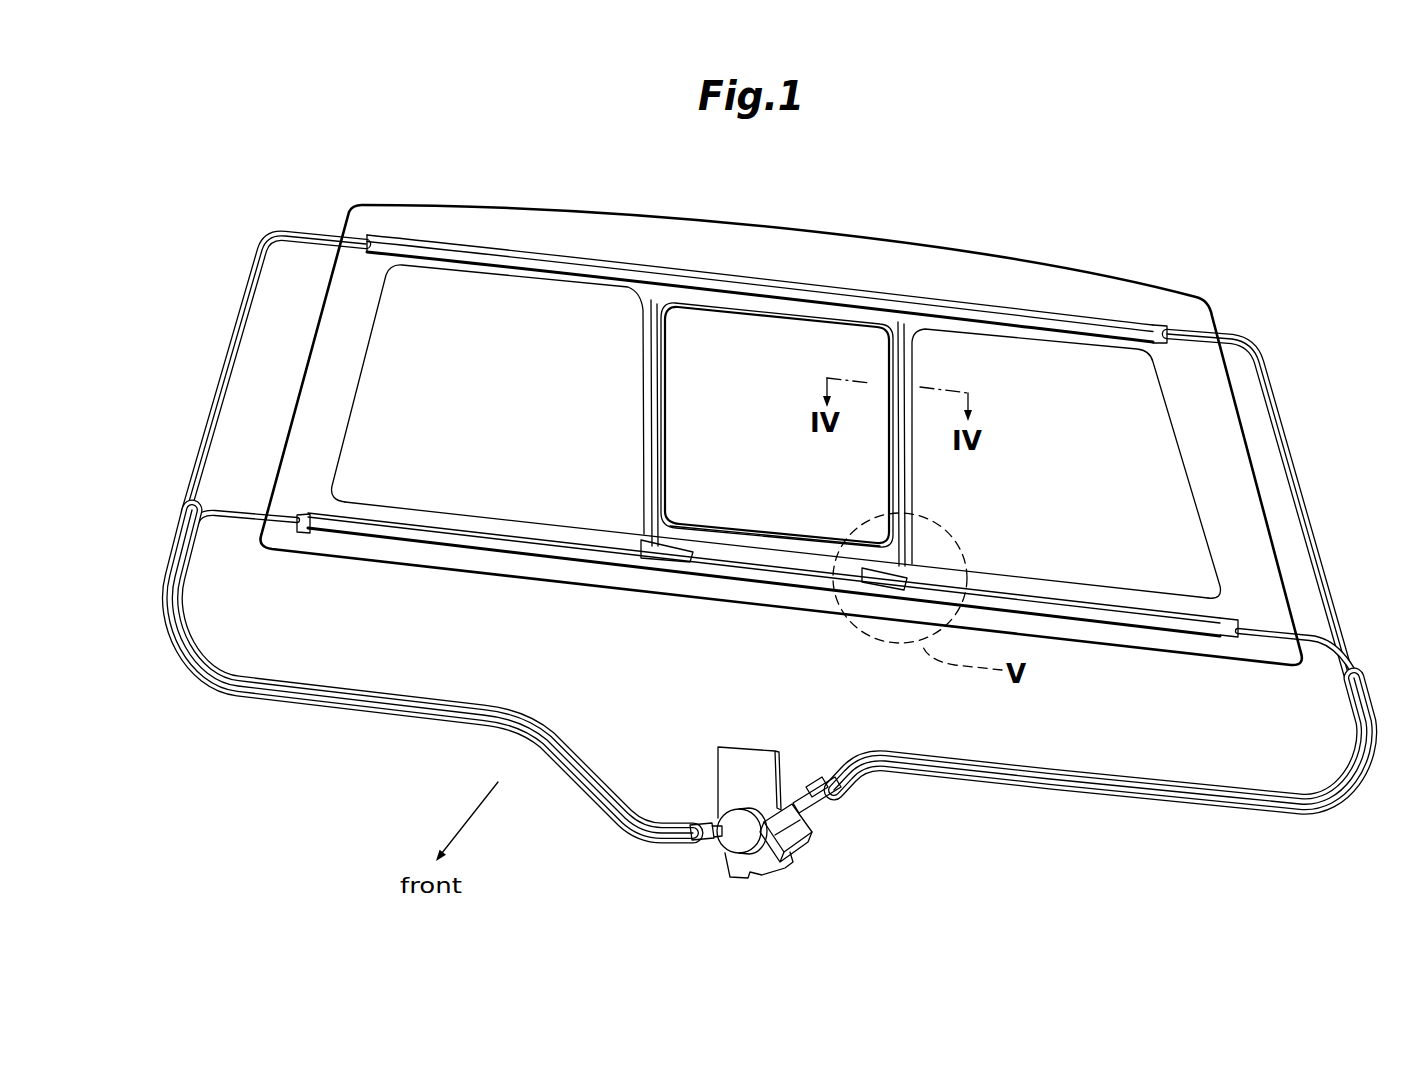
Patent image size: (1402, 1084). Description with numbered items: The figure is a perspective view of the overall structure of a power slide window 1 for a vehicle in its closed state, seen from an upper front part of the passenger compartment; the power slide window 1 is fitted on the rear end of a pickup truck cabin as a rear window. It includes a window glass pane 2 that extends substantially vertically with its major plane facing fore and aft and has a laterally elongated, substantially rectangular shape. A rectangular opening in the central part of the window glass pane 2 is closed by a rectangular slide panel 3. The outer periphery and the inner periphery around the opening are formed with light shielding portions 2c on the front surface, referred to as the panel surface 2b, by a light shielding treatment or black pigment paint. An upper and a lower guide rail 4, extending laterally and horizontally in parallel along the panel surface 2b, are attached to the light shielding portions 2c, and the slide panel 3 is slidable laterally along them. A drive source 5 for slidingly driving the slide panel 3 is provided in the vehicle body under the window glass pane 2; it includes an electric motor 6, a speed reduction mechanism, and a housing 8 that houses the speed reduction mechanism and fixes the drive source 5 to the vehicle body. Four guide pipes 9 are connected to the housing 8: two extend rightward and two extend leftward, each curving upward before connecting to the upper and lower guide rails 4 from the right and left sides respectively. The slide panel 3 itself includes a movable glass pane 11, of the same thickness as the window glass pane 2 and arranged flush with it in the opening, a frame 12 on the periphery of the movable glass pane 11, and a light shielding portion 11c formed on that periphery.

The power slide window 1 is at (1143, 168).
The window glass pane 2 is at (905, 242).
The panel surface 2b is at (578, 332).
The light shielding portions 2c is at (1036, 272).
The slide panel 3 is at (727, 284).
The guide rail 4 is at (1118, 321).
The drive source 5 is at (784, 884).
The electric motor 6 is at (803, 850).
The housing 8 is at (723, 820).
The guide pipes 9 is at (307, 703).
The movable glass pane 11 is at (750, 515).
The light shielding portion 11c is at (813, 548).
The frame 12 is at (690, 545).